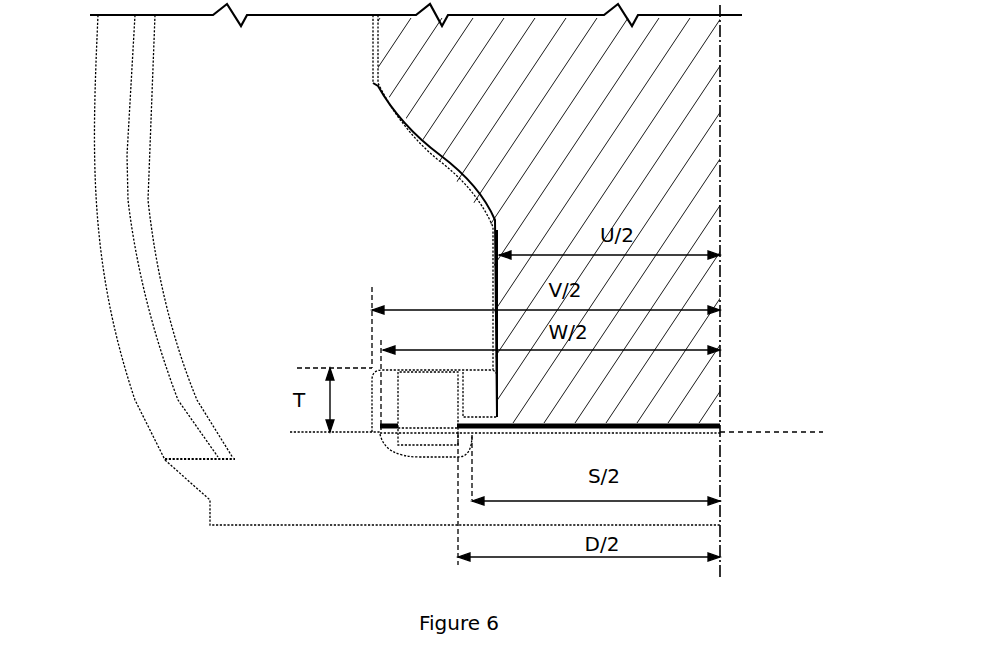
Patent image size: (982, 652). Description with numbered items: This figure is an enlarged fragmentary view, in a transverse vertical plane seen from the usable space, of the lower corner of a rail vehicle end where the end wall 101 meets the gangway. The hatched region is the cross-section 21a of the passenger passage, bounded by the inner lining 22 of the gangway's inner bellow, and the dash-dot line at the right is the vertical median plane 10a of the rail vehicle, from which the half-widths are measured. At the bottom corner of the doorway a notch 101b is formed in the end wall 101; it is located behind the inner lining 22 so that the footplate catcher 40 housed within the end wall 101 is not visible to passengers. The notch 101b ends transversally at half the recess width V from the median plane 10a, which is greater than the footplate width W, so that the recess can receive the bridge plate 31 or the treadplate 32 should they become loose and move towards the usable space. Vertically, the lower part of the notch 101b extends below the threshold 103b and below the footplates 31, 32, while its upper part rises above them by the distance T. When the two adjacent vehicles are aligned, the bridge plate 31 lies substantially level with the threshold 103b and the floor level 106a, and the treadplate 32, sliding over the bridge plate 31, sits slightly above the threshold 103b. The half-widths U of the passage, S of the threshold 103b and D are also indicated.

The vertical median plane 10a is at (720, 172).
The cross-section of the passage 21a is at (646, 116).
The inner lining 22 is at (500, 287).
The end wall 101 is at (235, 235).
The notch 101b is at (368, 385).
The footplate catcher 40 is at (435, 433).
The bridge plate 31 is at (377, 433).
The treadplate 32 is at (680, 425).
The threshold 103b is at (658, 435).
The floor level 106a is at (755, 430).